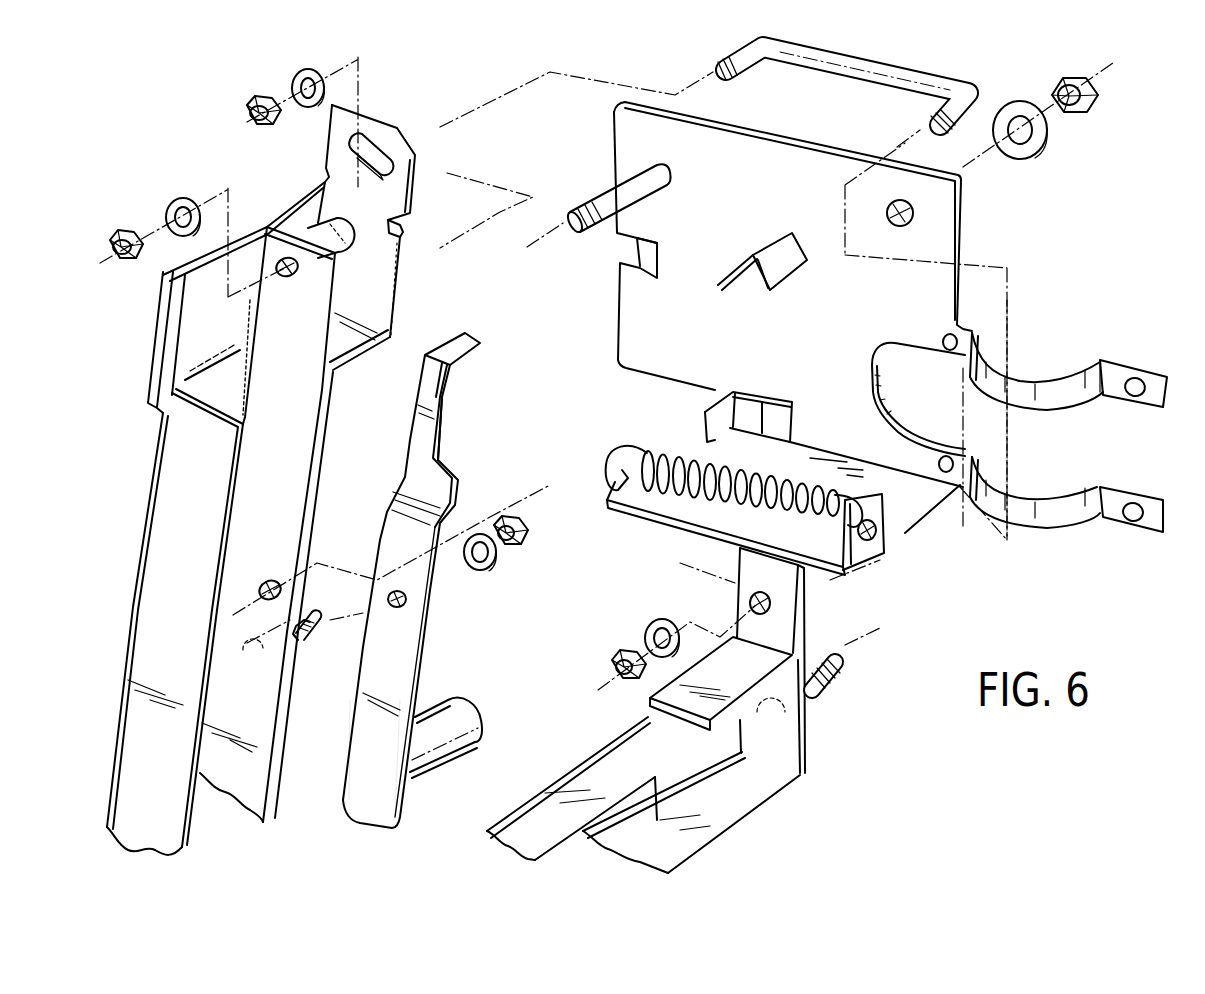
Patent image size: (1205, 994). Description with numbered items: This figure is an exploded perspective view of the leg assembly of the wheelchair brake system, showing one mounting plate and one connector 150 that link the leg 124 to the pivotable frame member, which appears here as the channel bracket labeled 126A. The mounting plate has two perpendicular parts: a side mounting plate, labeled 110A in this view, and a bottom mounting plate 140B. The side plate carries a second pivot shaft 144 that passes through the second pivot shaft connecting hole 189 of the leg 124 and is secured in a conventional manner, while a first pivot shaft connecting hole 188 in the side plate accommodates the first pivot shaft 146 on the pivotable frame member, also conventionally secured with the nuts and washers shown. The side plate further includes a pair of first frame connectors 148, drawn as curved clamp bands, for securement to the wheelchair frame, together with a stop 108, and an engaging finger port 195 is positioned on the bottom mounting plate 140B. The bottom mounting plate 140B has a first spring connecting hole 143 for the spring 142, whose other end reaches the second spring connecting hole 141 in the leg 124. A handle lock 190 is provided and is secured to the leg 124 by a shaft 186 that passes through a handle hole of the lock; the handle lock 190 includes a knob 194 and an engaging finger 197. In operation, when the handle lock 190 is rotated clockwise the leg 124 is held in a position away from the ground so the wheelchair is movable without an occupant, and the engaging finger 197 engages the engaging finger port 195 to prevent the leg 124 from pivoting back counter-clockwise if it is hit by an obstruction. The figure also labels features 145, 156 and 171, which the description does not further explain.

The stop 108 is at (763, 243).
The mounting plate 110A is at (632, 127).
The leg 124 is at (273, 500).
The bracket 126A is at (775, 797).
The bottom mounting plate 140B is at (717, 517).
The second spring connecting hole 141 is at (272, 583).
The spring 142 is at (652, 447).
The first spring connecting hole 143 is at (875, 530).
The second pivot shaft 144 is at (597, 193).
The flange 145 is at (880, 553).
The first pivot shaft 146 is at (813, 693).
The first frame connectors 148 is at (1083, 487).
The connector 150 is at (945, 70).
The slot 156 is at (377, 150).
The hole 171 is at (392, 608).
The shaft 186 is at (297, 643).
The first pivot shaft connecting hole 188 is at (910, 216).
The second pivot shaft connecting hole 189 is at (283, 255).
The handle lock 190 is at (372, 735).
The knob 194 is at (480, 715).
The engaging finger port 195 is at (710, 417).
The engaging finger 197 is at (458, 345).